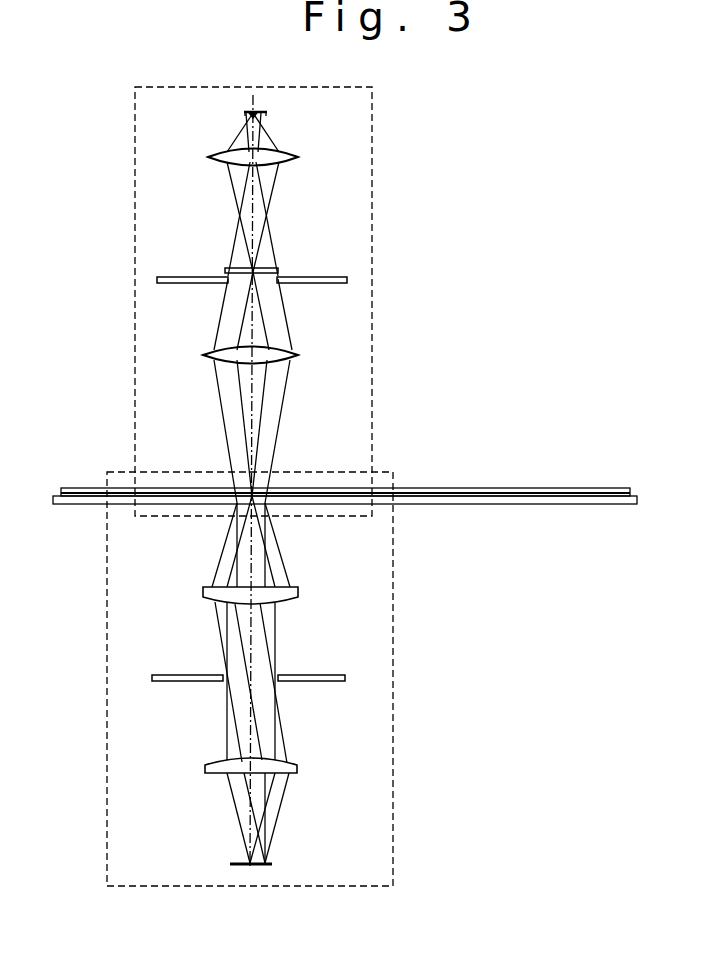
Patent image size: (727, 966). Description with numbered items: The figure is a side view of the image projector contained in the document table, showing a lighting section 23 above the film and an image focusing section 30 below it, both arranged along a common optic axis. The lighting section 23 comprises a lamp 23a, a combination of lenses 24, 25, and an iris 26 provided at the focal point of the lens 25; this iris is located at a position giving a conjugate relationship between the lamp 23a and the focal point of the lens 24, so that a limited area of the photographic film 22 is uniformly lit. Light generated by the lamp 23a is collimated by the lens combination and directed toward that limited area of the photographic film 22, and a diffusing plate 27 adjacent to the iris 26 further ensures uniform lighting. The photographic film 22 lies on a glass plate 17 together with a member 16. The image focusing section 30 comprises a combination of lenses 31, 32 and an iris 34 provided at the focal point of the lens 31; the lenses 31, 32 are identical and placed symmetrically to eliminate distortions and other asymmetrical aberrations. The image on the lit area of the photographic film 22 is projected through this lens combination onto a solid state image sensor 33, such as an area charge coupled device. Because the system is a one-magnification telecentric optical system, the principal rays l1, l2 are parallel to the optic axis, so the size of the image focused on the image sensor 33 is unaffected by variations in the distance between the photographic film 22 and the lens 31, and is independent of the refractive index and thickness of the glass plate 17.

The lighting section 23 is at (372, 153).
The lamp 23a is at (257, 110).
The lens 25 is at (296, 153).
The diffusing plate 27 is at (278, 270).
The iris 26 is at (312, 283).
The lens 24 is at (297, 357).
The upper substrate 16 is at (527, 490).
The photographic film 22 is at (480, 491).
The glass plate 17 is at (505, 504).
The image focusing section 30 is at (393, 766).
The principal ray l1 is at (236, 537).
The principal ray l2 is at (268, 540).
The lens 31 is at (298, 592).
The iris 34 is at (322, 682).
The lens 32 is at (297, 766).
The solid state image sensor 33 is at (273, 862).